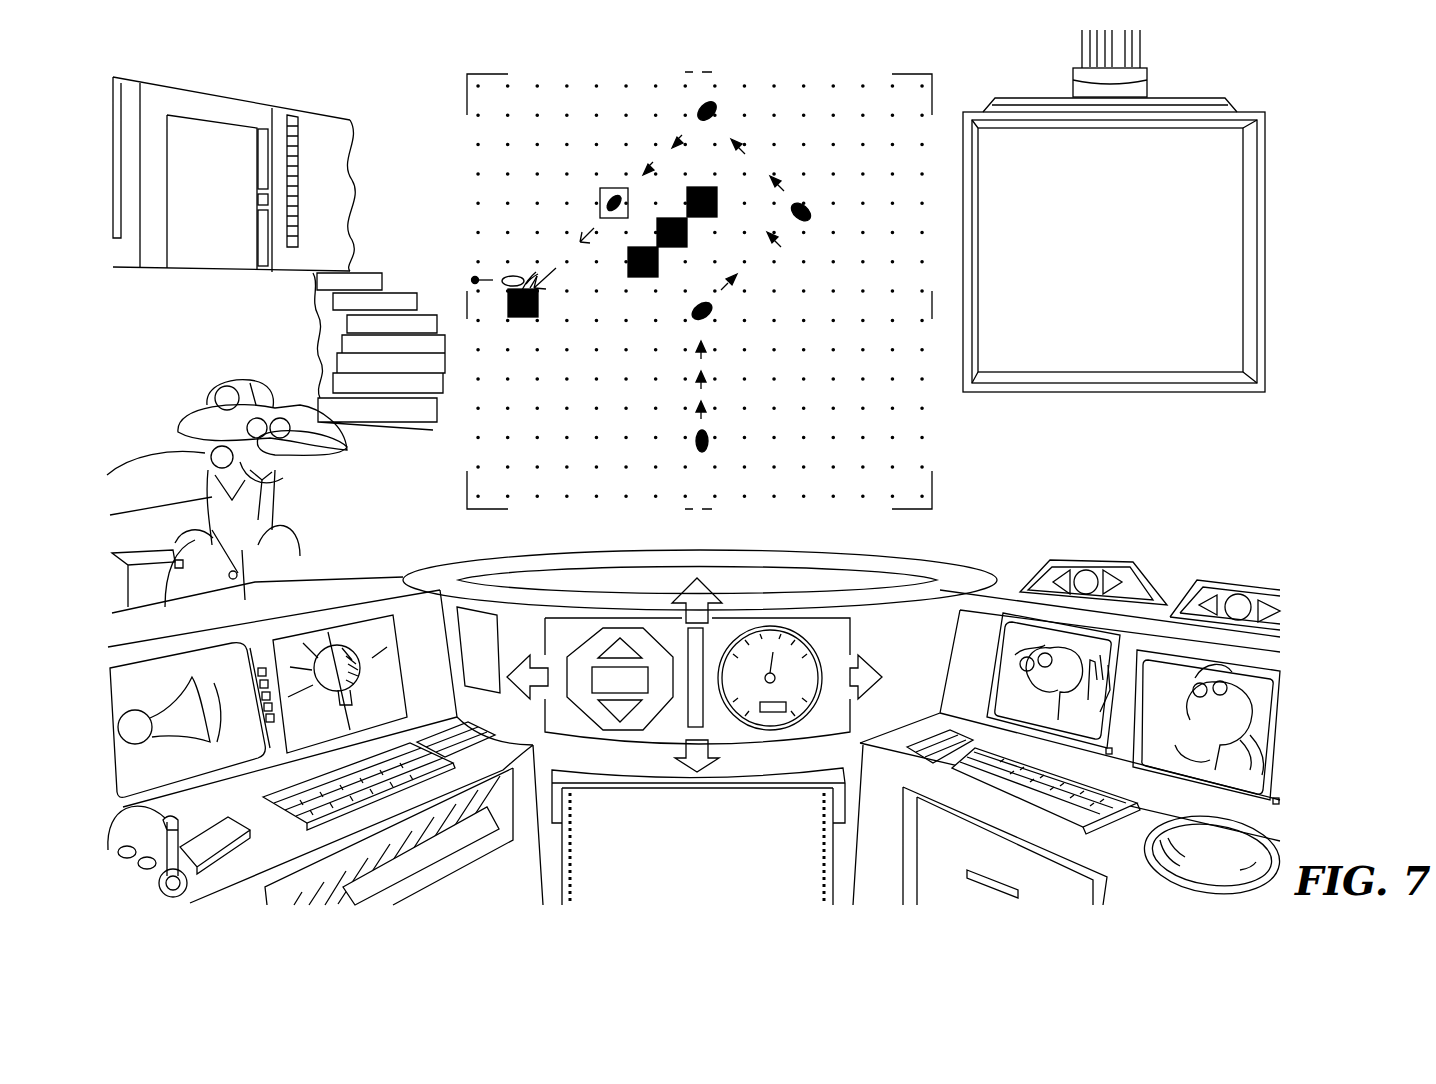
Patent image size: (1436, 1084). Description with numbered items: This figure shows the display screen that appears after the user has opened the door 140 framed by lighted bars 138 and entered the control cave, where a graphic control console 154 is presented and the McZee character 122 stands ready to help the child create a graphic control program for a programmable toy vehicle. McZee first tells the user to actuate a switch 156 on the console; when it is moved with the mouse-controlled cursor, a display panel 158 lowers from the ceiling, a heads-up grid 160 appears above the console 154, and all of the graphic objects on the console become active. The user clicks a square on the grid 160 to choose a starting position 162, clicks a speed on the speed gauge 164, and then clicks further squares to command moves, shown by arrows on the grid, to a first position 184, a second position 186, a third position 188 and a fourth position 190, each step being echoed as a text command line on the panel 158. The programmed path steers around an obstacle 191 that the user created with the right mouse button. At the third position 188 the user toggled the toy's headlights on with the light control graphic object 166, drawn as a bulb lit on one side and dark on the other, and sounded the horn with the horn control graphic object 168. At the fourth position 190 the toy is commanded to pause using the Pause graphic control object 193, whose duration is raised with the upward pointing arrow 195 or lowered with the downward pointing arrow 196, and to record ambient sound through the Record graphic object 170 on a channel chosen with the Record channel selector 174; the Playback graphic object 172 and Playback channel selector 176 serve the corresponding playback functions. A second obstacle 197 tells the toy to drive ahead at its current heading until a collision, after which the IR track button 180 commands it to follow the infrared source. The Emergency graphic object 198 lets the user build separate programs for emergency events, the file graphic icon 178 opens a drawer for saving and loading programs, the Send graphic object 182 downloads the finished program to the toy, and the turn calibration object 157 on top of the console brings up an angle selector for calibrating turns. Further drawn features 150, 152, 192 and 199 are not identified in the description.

The McZee character 122 is at (185, 420).
The lighted bars 138 is at (266, 122).
The door 140 is at (238, 189).
The display screen 150 is at (1105, 477).
The stairs 152 is at (332, 320).
The control console 154 is at (452, 545).
The switch 156 is at (475, 627).
The turn calibration object 157 is at (705, 567).
The display panel 158 is at (1212, 365).
The heads-up grid 160 is at (932, 478).
The starting position 162 is at (709, 437).
The speed gauge 164 is at (812, 640).
The light control graphic object 166 is at (382, 644).
The horn control graphic object 168 is at (190, 652).
The Record graphic object 170 is at (1003, 664).
The Playback graphic object 172 is at (1162, 666).
The Record channel selector graphic object 174 is at (1060, 556).
The Playback channel selector 176 is at (1215, 582).
The file graphic icon 178 is at (958, 847).
The IR track button 180 is at (1172, 872).
The Send graphic object 182 is at (250, 830).
The first position 184 is at (713, 314).
The second position 186 is at (812, 220).
The third position 188 is at (718, 108).
The fourth position 190 is at (600, 208).
The obstacle 191 is at (627, 258).
The keyboard 192 is at (952, 780).
The Pause graphic control object 193 is at (594, 683).
The upward pointing arrow 195 is at (620, 640).
The downward pointing arrow 196 is at (620, 722).
The obstacle 197 is at (538, 305).
The Emergency graphic object 198 is at (447, 858).
The IR source marker 199 is at (510, 275).